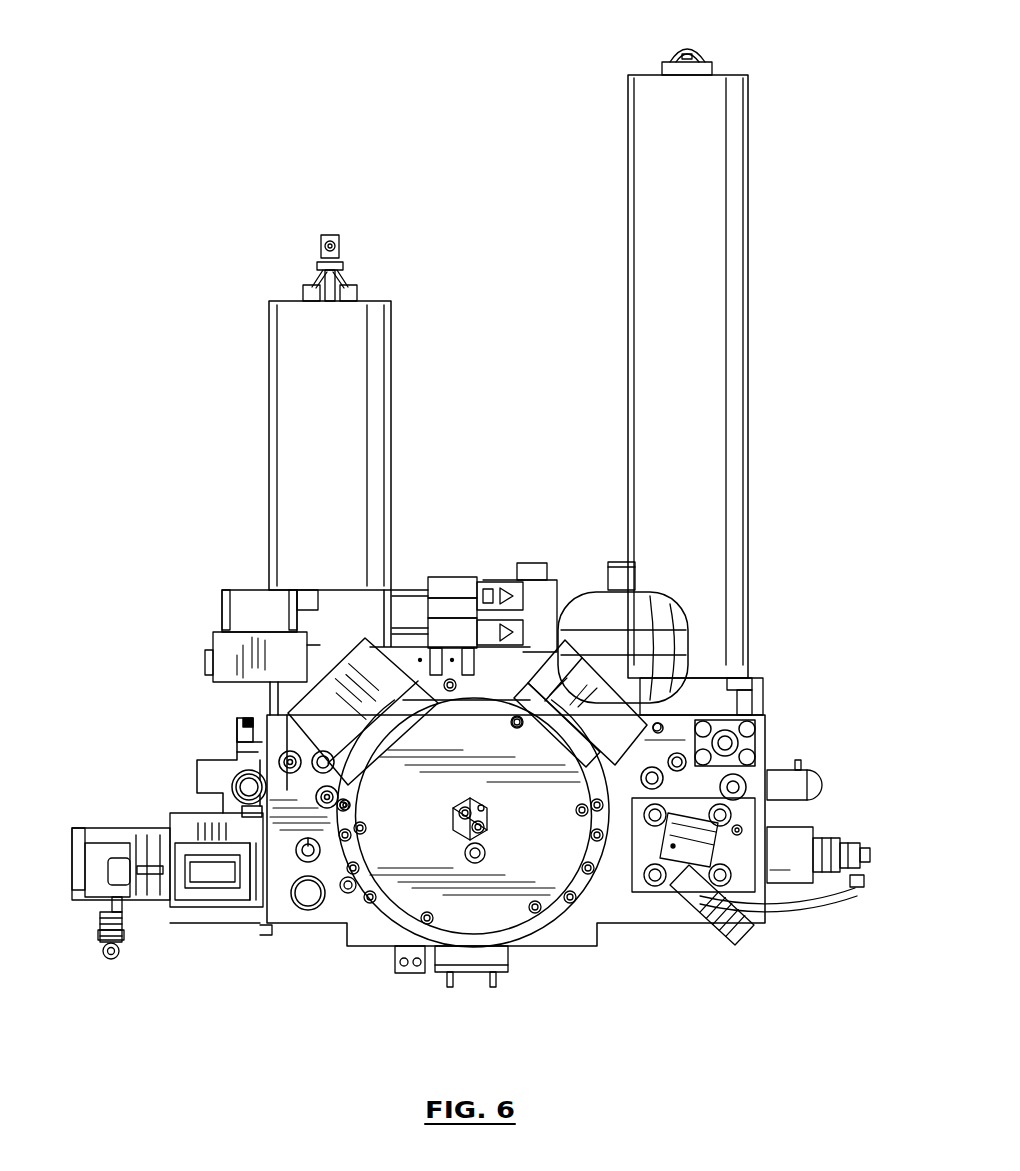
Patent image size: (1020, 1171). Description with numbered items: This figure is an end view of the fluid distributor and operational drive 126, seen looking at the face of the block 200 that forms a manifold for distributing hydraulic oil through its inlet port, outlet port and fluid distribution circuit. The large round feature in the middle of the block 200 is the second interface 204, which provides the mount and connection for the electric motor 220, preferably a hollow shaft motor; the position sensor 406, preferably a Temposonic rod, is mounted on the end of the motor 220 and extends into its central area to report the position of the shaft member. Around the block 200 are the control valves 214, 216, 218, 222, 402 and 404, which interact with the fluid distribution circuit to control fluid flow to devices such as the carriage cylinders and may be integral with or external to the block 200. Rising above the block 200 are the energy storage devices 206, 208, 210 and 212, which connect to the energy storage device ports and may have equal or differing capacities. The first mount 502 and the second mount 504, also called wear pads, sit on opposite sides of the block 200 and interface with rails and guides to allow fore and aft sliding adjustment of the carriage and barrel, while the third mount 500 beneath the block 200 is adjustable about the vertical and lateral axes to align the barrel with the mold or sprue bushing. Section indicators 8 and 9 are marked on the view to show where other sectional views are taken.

The section line 8- 8 is at (471, 555).
The section line 9- 9 is at (170, 817).
The fluid distributor and operational drive 126 is at (490, 559).
The block 200 is at (375, 946).
The second interface 204 is at (535, 930).
The energy storage device 206 is at (748, 277).
The energy storage device 208 is at (527, 562).
The energy storage device 210 is at (607, 562).
The energy storage device 212 is at (270, 302).
The control valve 214 is at (100, 912).
The control valve 216 is at (122, 905).
The control valve 218 is at (453, 577).
The electric motor 220 is at (565, 905).
The control valve 222 is at (240, 590).
The control valve 402 is at (815, 865).
The control valve 404 is at (752, 940).
The position sensor 406 is at (455, 838).
The third mount 500 is at (482, 973).
The first mount 502 is at (668, 925).
The second mount 504 is at (318, 928).